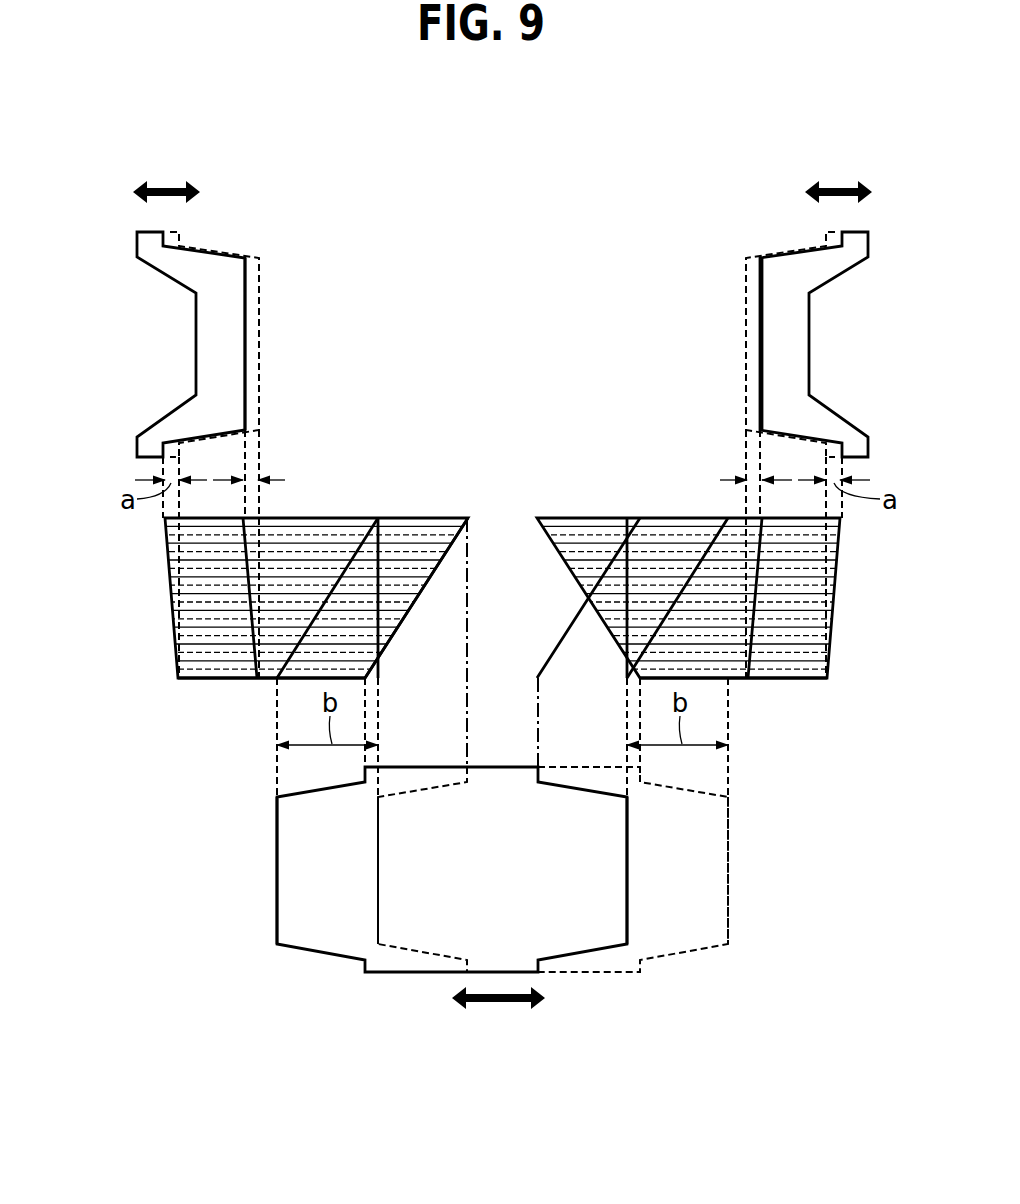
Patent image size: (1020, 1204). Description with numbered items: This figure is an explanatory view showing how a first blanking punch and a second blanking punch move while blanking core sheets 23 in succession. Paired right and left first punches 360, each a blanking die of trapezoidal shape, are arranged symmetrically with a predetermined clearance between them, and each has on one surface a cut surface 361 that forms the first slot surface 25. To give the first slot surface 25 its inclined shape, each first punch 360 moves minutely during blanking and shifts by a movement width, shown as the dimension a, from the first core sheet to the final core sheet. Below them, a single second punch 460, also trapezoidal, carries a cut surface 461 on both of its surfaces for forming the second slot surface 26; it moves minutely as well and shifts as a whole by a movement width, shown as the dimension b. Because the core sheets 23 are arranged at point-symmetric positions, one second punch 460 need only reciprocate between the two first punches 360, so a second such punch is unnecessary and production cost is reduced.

The core sheet 23 is at (220, 686).
The first slot surface 25 is at (166, 592).
The second slot surface 26 is at (422, 604).
The first punch 360 is at (284, 259).
The cut surface 361 is at (247, 346).
The second punch 460 is at (413, 984).
The cut surface 461 is at (378, 846).